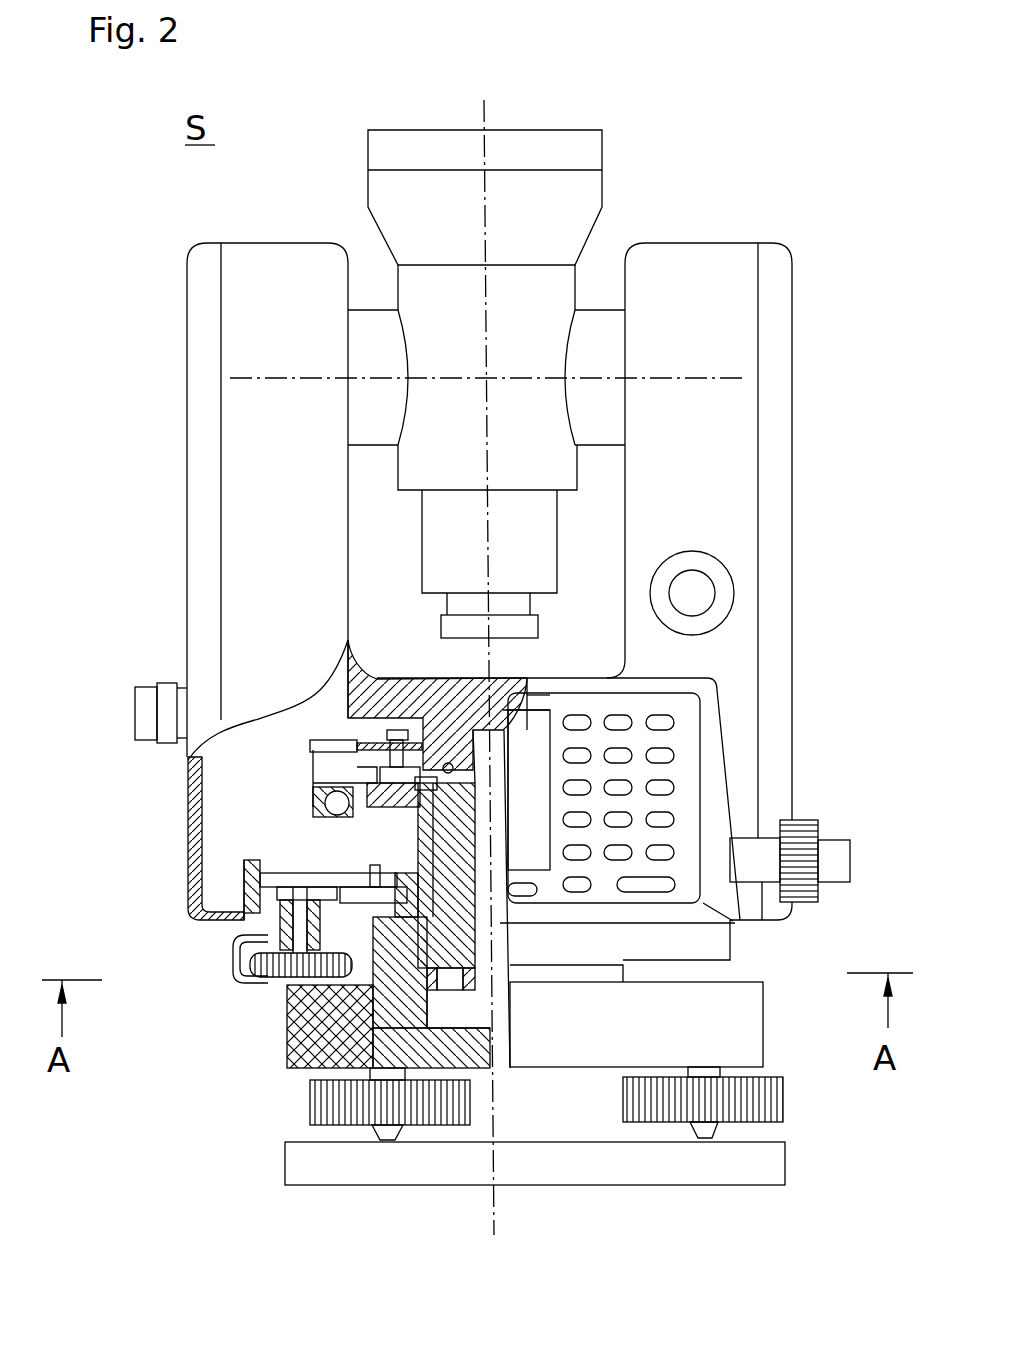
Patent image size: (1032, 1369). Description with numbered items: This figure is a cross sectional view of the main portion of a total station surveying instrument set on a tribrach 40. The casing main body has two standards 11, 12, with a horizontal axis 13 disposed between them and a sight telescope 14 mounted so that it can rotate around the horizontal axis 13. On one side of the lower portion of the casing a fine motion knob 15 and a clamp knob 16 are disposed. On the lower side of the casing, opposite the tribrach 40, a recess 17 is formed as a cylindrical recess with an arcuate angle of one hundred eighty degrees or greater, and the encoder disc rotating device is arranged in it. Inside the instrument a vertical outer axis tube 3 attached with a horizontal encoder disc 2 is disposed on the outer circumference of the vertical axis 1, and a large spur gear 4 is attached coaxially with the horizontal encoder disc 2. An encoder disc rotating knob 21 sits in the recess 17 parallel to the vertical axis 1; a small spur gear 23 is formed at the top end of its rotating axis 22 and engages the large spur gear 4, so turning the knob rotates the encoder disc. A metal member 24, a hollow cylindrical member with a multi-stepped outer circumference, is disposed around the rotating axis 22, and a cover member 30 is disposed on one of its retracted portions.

The vertical axis 1 is at (462, 750).
The horizontal encoder disc 2 is at (345, 745).
The vertical outer axis tube 3 is at (297, 830).
The large spur gear 4 is at (290, 855).
The standard 11 is at (720, 268).
The standard 12 is at (242, 253).
The horizontal axis 13 is at (373, 323).
The sight telescope 14 is at (570, 148).
The fine motion knob 15 is at (808, 903).
The clamp knob 16 is at (837, 845).
The recess 17 is at (293, 1068).
The encoder disc rotating knob 21 is at (248, 985).
The rotating axis 22 is at (243, 970).
The small spur gear 23 is at (262, 873).
The metal member 24 is at (283, 1010).
The cover member 30 is at (235, 947).
The tribrach 40 is at (277, 1165).